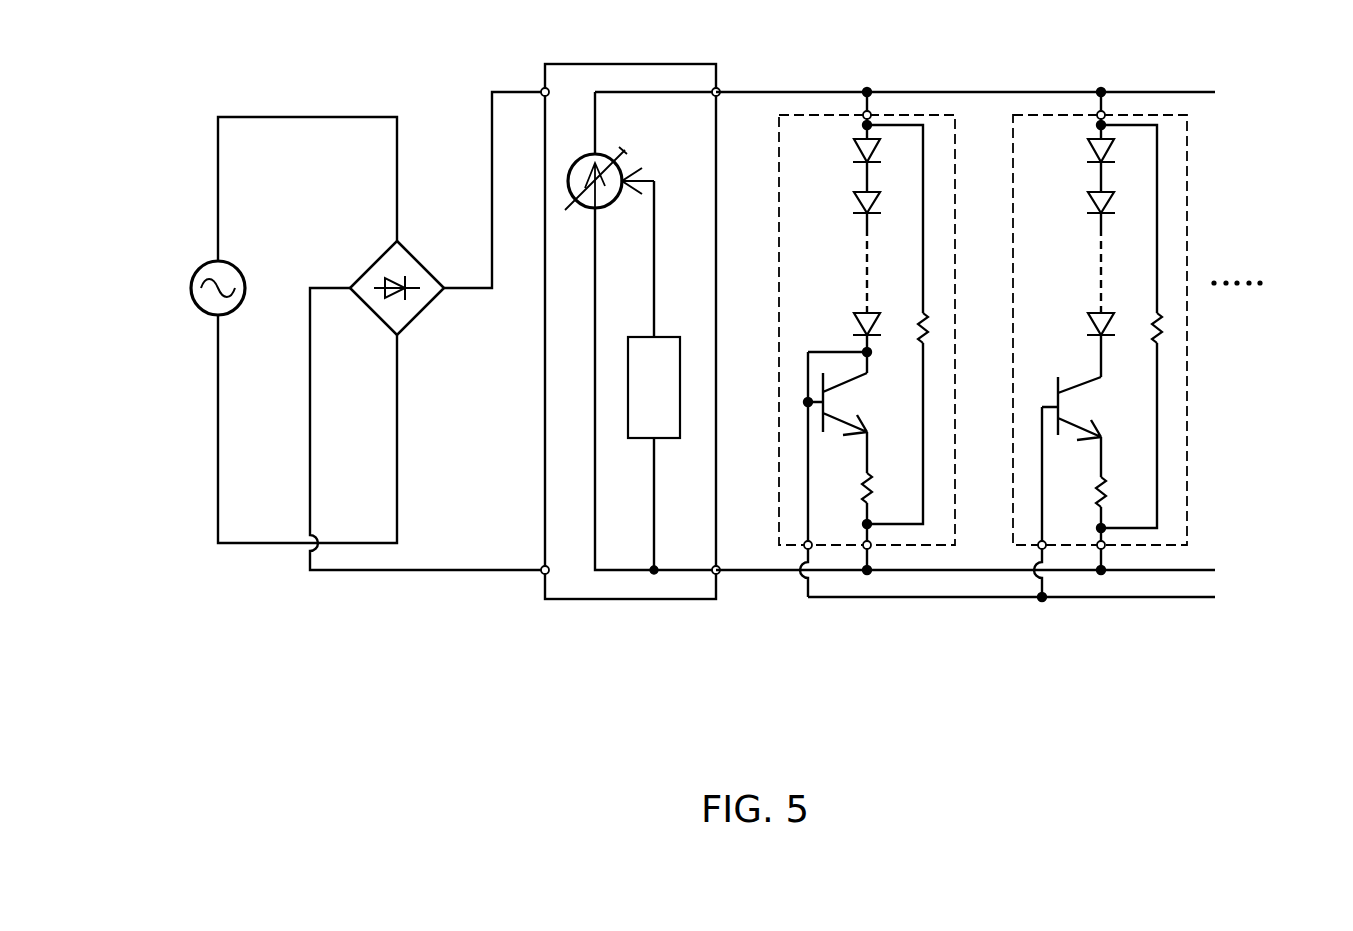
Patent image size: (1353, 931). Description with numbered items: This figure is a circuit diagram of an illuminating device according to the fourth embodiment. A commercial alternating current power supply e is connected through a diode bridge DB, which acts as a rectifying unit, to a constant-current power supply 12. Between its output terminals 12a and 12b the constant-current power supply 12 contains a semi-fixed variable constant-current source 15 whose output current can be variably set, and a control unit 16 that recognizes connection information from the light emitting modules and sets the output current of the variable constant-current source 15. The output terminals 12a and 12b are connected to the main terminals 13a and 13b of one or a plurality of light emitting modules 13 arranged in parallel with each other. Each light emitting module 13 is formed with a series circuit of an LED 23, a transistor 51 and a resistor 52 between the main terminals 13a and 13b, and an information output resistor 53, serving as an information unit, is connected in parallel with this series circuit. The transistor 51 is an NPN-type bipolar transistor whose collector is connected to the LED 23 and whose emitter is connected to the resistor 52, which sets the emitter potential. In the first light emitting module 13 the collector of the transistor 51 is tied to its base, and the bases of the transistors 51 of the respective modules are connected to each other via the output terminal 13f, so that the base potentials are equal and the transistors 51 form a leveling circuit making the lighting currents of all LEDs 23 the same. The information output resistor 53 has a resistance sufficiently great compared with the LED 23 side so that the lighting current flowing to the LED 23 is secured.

The commercial alternating current power supply e is at (191, 280).
The diode bridge DB is at (360, 278).
The constant-current power supply 12 is at (648, 52).
The output terminal 12a is at (718, 89).
The output terminal 12b is at (718, 573).
The semi-fixed variable constant-current source 15 is at (609, 156).
The control unit 16 is at (632, 337).
The light emitting module 13 is at (925, 102).
The main terminal 13a is at (872, 113).
The main terminal 13b is at (869, 549).
The output terminal 13f is at (806, 549).
The LED 23 is at (853, 145).
The transistor 51 is at (861, 395).
The resistor 52 is at (862, 481).
The information output resistor 53 is at (918, 322).